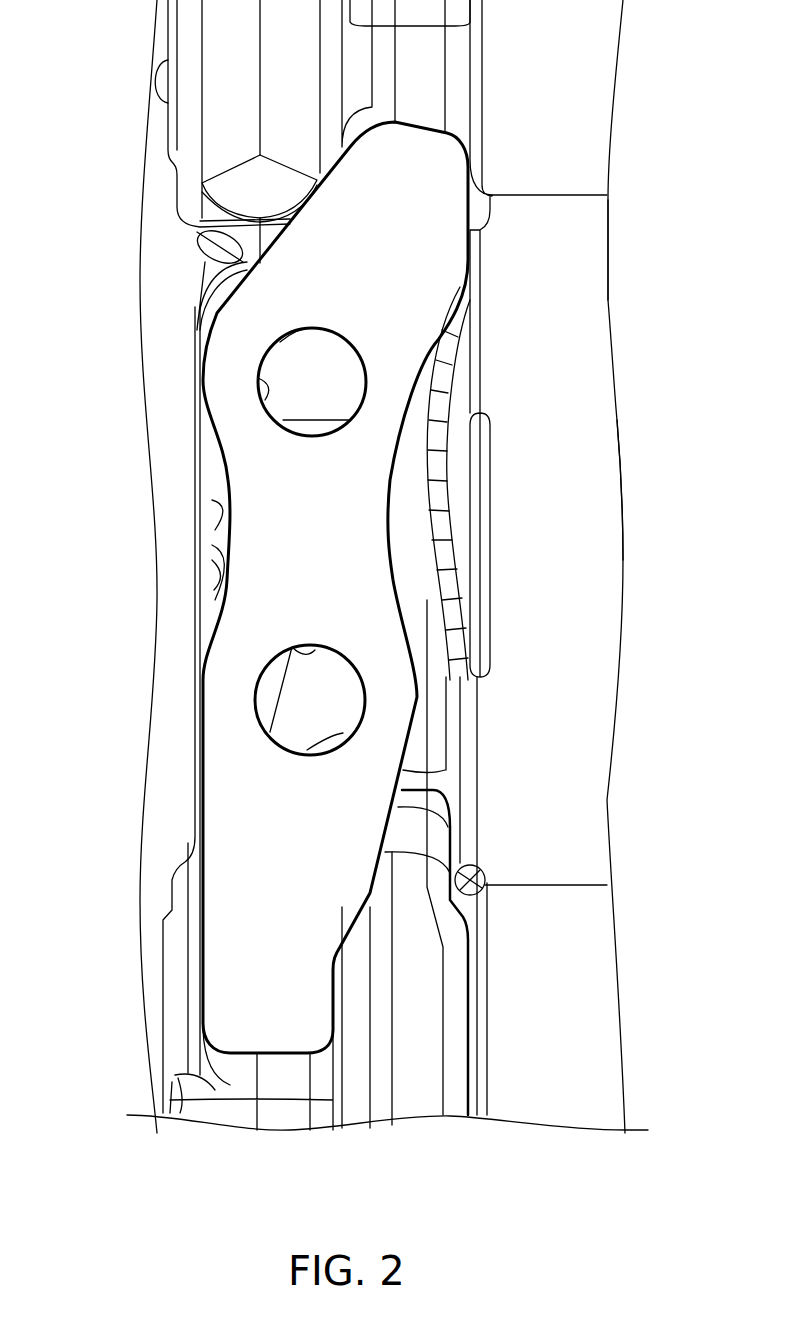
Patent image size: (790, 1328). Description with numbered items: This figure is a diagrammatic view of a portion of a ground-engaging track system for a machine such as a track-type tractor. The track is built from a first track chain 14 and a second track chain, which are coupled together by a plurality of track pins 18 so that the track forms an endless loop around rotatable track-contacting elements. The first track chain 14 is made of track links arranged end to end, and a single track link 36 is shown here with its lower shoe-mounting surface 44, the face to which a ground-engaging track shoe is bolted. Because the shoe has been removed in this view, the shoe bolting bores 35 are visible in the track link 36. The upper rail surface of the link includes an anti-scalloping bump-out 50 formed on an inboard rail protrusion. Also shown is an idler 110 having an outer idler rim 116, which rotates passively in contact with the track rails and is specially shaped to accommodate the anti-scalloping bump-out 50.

The first track chain 14 is at (130, 878).
The track pins 18 is at (608, 72).
The shoe bolting bores 35 is at (266, 392).
The track link 36 is at (168, 65).
The lower shoe-mounting surface 44 is at (247, 517).
The anti-scalloping bump-out 50 is at (470, 588).
The idler 110 is at (610, 318).
The outer idler rim 116 is at (579, 493).